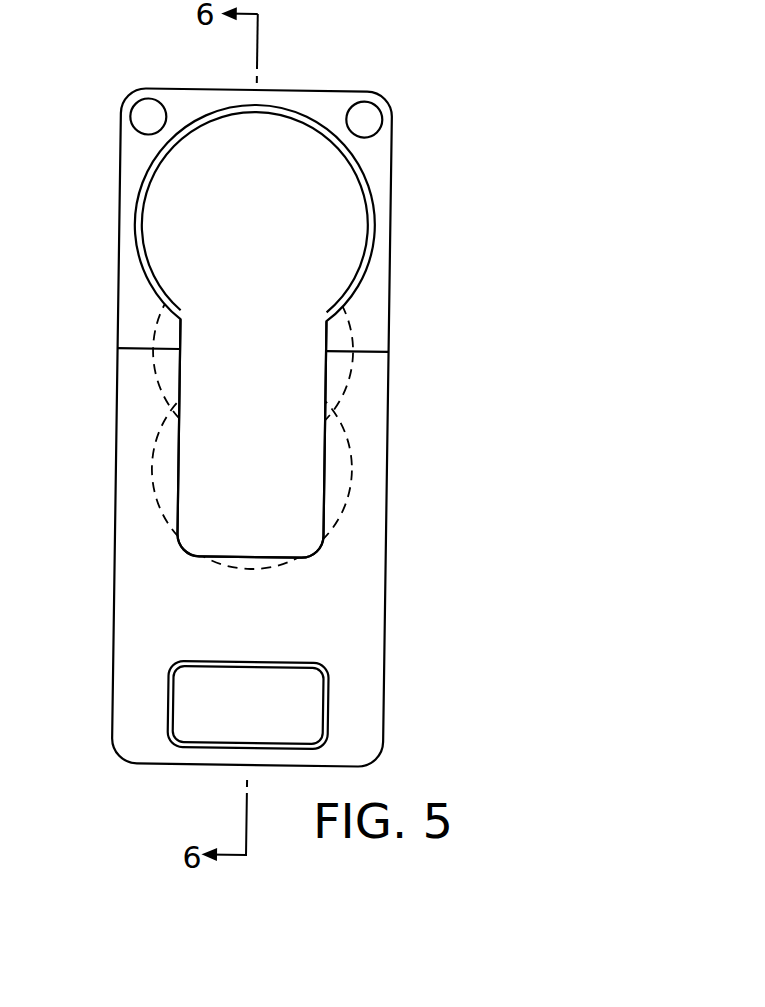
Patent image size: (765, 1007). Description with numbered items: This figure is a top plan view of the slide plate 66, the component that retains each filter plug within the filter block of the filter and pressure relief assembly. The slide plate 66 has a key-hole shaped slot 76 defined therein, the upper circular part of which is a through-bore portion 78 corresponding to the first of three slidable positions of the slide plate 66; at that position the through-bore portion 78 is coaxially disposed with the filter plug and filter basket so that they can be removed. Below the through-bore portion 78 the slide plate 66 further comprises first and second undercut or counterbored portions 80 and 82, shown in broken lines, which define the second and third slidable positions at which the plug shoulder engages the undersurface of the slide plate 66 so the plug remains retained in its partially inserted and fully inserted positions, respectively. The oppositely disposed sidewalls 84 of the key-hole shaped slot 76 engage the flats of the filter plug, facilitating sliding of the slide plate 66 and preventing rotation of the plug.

The slide plate 66 is at (130, 605).
The key-hole shaped slot 76 is at (142, 263).
The through-bore portion 78 is at (264, 231).
The first undercut or counterbored portion 80 is at (352, 342).
The second undercut or counterbored portion 82 is at (342, 520).
The sidewalls 84 is at (178, 433).